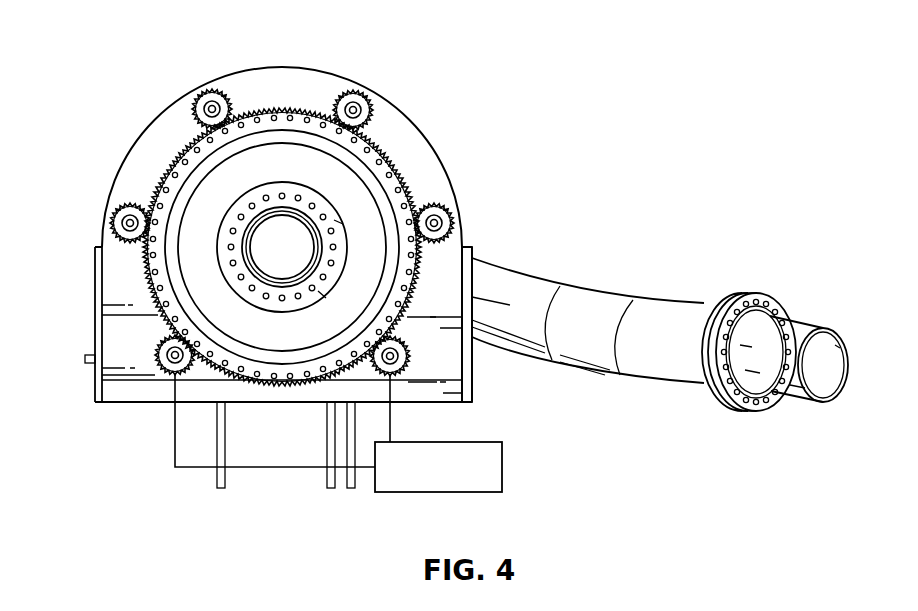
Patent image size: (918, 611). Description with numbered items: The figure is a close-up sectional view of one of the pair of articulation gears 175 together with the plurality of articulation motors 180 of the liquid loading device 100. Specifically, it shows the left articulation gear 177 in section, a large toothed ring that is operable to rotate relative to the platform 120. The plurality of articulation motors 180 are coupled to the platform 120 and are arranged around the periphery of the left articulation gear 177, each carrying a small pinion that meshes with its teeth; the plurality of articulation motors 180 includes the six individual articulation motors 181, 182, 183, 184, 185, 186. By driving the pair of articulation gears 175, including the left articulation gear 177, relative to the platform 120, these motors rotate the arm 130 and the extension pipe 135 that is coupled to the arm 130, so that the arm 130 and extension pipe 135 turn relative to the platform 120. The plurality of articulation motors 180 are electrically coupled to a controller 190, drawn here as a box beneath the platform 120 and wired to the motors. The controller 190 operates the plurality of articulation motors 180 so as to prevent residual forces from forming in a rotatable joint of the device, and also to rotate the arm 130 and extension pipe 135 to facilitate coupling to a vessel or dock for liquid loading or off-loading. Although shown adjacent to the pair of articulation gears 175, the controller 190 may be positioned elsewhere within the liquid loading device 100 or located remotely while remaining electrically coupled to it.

The liquid loading device 100 is at (108, 56).
The platform 120 is at (460, 409).
The arm 130 is at (478, 250).
The extension pipe 135 is at (582, 300).
The pair of articulation gears 175 is at (272, 97).
The left articulation gear 177 is at (300, 104).
The plurality of articulation motors 180 is at (194, 99).
The articulation motor 181 is at (208, 91).
The articulation motor 182 is at (353, 104).
The articulation motor 183 is at (438, 207).
The articulation motor 184 is at (400, 343).
The articulation motor 185 is at (163, 380).
The articulation motor 186 is at (137, 207).
The controller 190 is at (503, 467).